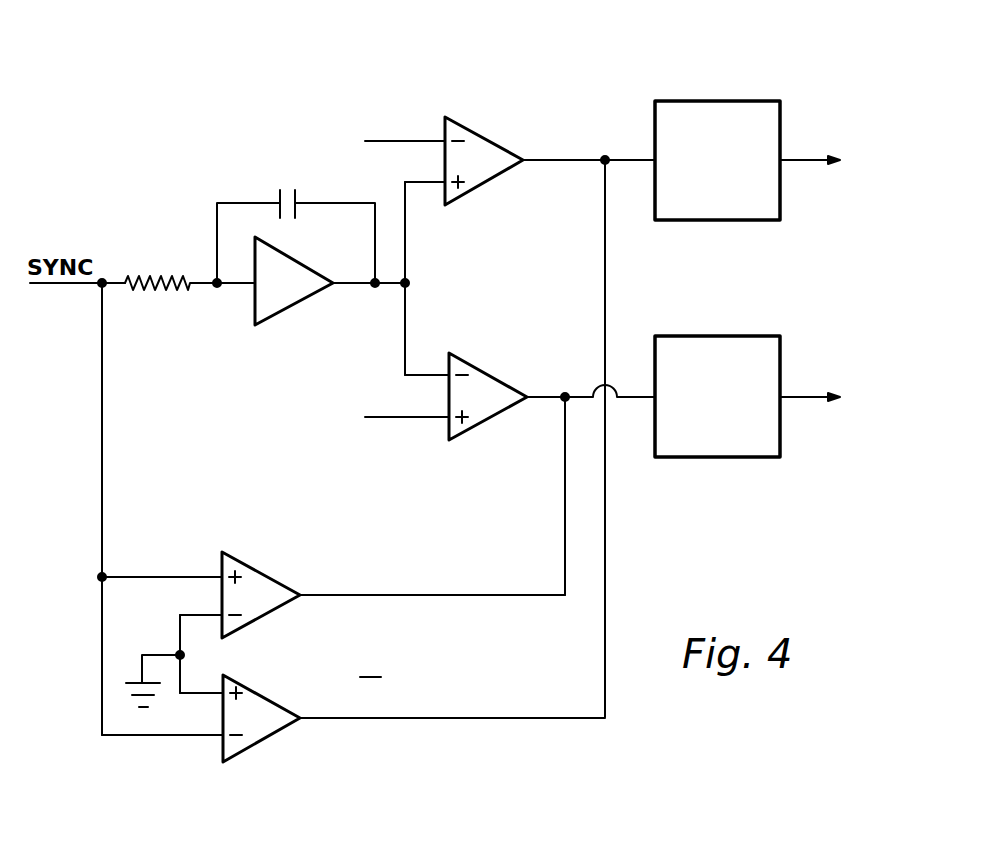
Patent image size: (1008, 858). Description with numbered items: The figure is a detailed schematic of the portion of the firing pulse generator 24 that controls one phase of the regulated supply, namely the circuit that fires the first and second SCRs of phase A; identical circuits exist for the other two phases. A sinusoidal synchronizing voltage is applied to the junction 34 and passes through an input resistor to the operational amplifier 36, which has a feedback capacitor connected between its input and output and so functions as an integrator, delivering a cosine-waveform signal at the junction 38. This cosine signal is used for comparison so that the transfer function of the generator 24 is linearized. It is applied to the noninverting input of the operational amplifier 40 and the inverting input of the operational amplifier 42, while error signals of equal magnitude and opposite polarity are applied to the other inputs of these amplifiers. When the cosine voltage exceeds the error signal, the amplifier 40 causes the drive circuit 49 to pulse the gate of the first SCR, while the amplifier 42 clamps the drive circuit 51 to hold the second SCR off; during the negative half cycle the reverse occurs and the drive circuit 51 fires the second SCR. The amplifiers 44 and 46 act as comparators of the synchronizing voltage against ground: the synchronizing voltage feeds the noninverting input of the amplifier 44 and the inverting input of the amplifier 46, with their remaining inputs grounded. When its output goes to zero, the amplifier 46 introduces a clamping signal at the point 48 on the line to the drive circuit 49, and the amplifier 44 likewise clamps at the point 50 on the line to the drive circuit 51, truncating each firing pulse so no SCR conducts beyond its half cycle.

The firing pulse generator 24 is at (250, 153).
The junction 34 is at (104, 281).
The operational amplifier 36 is at (285, 313).
The junction 38 is at (407, 283).
The operational amplifier 40 is at (493, 142).
The operational amplifier 42 is at (487, 425).
The amplifier 44 is at (270, 578).
The amplifier 46 is at (272, 700).
The point 48 is at (606, 158).
The drive circuit 49 is at (730, 100).
The point 50 is at (565, 395).
The drive circuit 51 is at (695, 458).